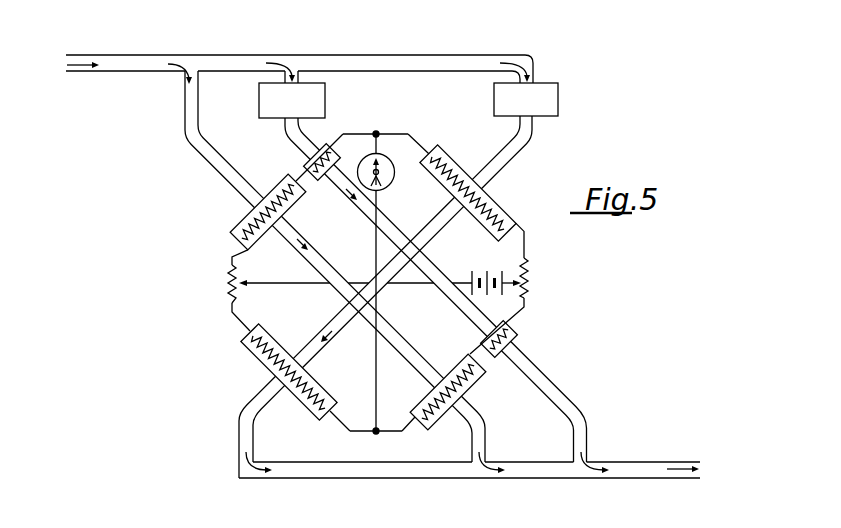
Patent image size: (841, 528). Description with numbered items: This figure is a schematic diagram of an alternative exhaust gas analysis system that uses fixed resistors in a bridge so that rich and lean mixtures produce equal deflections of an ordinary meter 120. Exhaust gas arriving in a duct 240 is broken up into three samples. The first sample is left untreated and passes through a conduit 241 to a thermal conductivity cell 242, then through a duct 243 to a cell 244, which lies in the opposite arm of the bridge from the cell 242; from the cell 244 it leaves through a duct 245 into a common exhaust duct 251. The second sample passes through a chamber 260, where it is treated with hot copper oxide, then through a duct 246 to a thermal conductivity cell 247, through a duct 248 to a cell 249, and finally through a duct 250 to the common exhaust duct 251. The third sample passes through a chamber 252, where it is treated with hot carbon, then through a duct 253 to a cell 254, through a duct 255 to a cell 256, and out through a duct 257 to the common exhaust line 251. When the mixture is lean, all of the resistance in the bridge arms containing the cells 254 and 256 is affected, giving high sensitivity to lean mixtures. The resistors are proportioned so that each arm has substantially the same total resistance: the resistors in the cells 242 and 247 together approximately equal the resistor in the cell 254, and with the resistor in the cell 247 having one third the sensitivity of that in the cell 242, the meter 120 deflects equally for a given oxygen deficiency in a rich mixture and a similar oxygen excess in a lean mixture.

The meter 120 is at (384, 184).
The duct 240 is at (158, 68).
The conduit 241 is at (212, 155).
The thermal conductivity cell 242 is at (248, 220).
The duct 243 is at (312, 258).
The cell 244 is at (460, 385).
The duct 245 is at (480, 445).
The duct 246 is at (290, 128).
The thermal conductivity cell 247 is at (307, 163).
The duct 248 is at (367, 212).
The cell 249 is at (515, 338).
The duct 250 is at (563, 400).
The common exhaust duct 251 is at (620, 466).
The chamber 252 is at (494, 102).
The duct 253 is at (510, 150).
The cell 254 is at (493, 205).
The duct 255 is at (430, 238).
The cell 256 is at (265, 362).
The duct 257 is at (245, 438).
The chamber 260 is at (259, 100).